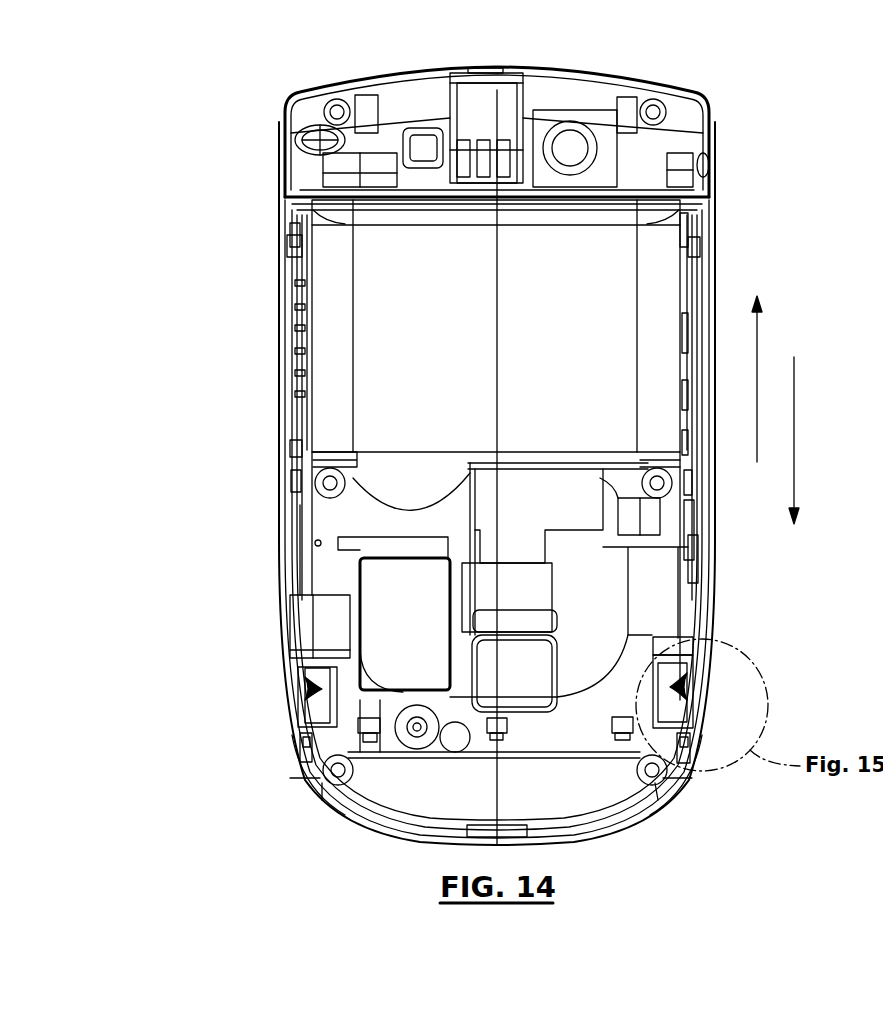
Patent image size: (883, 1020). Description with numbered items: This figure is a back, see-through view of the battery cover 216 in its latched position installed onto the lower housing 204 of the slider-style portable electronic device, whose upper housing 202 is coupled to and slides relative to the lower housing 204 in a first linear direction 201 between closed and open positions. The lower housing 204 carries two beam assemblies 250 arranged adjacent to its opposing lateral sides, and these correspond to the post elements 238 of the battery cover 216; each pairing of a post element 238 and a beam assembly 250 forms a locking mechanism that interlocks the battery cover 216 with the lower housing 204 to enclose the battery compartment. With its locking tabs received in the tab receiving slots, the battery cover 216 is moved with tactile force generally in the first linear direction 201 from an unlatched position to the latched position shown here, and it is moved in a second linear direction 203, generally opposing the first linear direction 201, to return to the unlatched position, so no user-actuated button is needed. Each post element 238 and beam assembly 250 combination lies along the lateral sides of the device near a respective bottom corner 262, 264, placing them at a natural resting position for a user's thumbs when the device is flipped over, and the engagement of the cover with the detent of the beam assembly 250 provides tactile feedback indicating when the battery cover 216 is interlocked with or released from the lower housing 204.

The upper housing 202 is at (698, 100).
The lower housing 204 is at (715, 150).
The battery cover 216 is at (287, 200).
The first linear direction 201 is at (757, 335).
The second linear direction 203 is at (794, 432).
The beam assembly 250 is at (307, 652).
The post element 238 is at (303, 683).
The bottom corner 262 is at (298, 782).
The bottom corner 264 is at (694, 784).